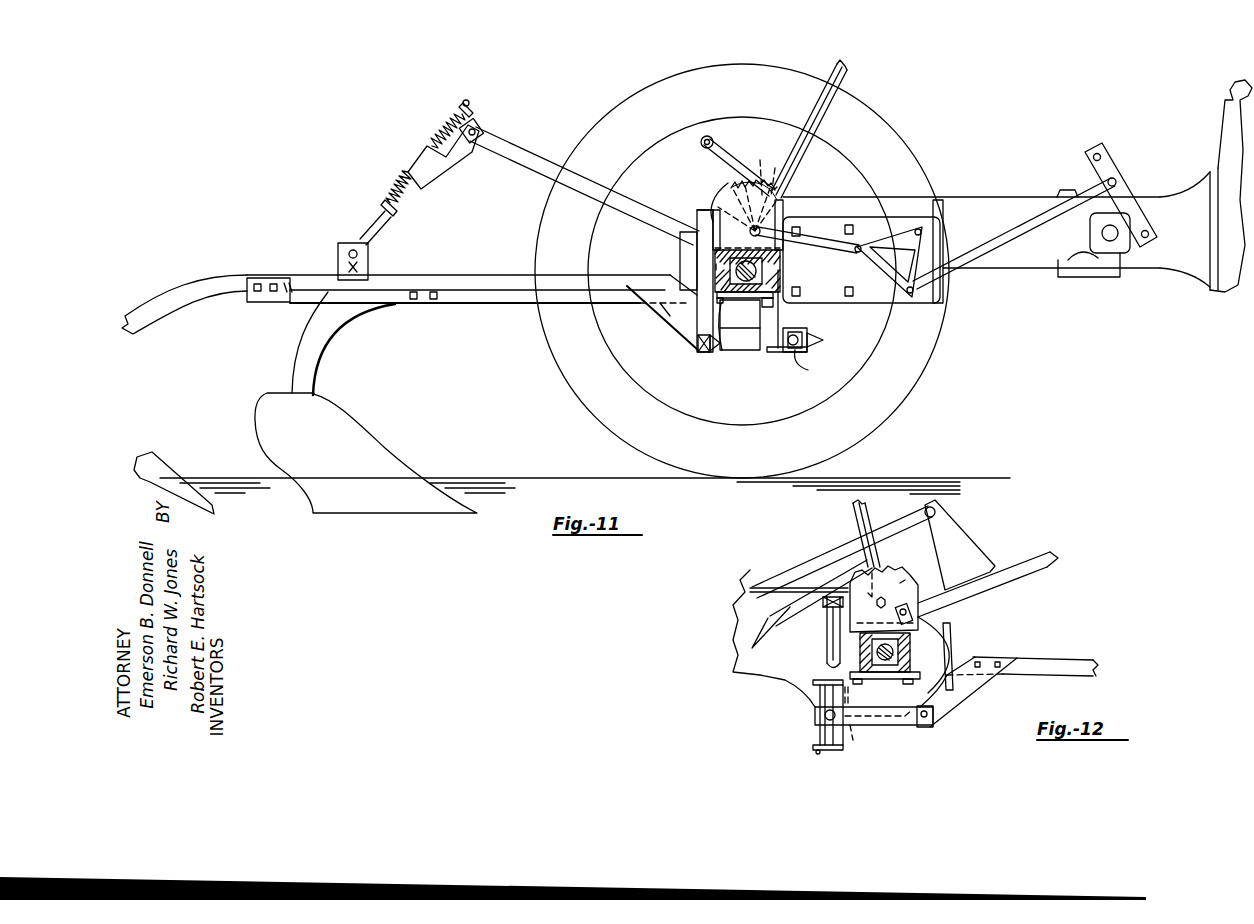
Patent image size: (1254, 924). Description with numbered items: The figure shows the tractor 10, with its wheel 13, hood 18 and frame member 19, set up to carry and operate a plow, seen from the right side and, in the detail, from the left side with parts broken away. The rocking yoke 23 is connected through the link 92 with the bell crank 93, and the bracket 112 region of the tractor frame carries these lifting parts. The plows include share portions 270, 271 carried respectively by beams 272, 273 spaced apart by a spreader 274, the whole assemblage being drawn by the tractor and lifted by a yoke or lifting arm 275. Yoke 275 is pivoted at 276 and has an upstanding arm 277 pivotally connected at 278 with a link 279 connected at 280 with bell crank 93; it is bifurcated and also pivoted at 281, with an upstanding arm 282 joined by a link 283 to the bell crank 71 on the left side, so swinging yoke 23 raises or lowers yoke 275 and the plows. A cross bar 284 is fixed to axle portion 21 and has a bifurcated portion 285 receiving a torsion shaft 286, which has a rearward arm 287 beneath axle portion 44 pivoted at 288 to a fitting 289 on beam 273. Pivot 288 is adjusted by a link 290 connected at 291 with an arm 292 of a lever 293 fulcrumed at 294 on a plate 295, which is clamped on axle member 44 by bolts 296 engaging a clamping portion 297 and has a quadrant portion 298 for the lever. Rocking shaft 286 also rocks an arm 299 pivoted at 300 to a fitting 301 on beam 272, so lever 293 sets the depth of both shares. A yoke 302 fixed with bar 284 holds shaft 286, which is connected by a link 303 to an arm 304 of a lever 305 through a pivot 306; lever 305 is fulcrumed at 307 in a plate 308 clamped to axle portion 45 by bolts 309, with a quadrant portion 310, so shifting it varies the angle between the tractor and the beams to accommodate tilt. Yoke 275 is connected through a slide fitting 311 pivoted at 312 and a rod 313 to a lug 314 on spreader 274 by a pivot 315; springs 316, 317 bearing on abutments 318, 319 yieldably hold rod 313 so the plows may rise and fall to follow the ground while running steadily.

In FIG. 11, the tractor 10 is at (1017, 192).
In FIG. 11, the wheel 13 is at (742, 271).
In FIG. 11, the hood 18 is at (1235, 125).
In FIG. 11, the frame member 19 is at (1046, 239).
In FIG. 11, the axle portion 21 is at (680, 244).
In FIG. 12, the axle portion 21 is at (952, 628).
In FIG. 11, the rocking yoke 23 is at (1148, 155).
In FIG. 11, the axle portion 44 is at (770, 272).
In FIG. 12, the axle portion 45 is at (884, 672).
In FIG. 12, the bell crank 71 is at (740, 642).
In FIG. 11, the link 92 is at (1002, 240).
In FIG. 11, the bell crank 93 is at (885, 290).
In FIG. 11, the bracket 112 is at (1112, 268).
In FIG. 11, the share portion 270 is at (158, 466).
In FIG. 11, the share portion 271 is at (366, 402).
In FIG. 11, the beam 272 is at (215, 278).
In FIG. 12, the beam 272 is at (1053, 660).
In FIG. 11, the beam 273 is at (480, 296).
In FIG. 11, the spreader 274 is at (312, 300).
In FIG. 11, the yoke or lifting arm 275 is at (535, 158).
In FIG. 12, the yoke or lifting arm 275 is at (1035, 555).
In FIG. 11, the pivot 276 is at (728, 215).
In FIG. 11, the upstanding arm 277 is at (677, 170).
In FIG. 11, the pivot 278 is at (710, 137).
In FIG. 11, the link 279 is at (752, 138).
In FIG. 11, the pivot connection 280 is at (855, 250).
In FIG. 12, the pivot 281 is at (920, 608).
In FIG. 12, the upstanding arm 282 is at (955, 540).
In FIG. 12, the link 283 is at (838, 570).
In FIG. 11, the cross bar 284 is at (780, 352).
In FIG. 12, the cross bar 284 is at (866, 720).
In FIG. 11, the bifurcated portion 285 is at (820, 340).
In FIG. 11, the torsion shaft 286 is at (820, 365).
In FIG. 12, the torsion shaft 286 is at (825, 716).
In FIG. 11, the arm 287 is at (718, 350).
In FIG. 11, the pivot 288 is at (702, 352).
In FIG. 11, the fitting 289 is at (640, 325).
In FIG. 11, the link 290 is at (697, 258).
In FIG. 11, the connection 291 is at (694, 207).
In FIG. 11, the arm 292 is at (758, 165).
In FIG. 11, the lever 293 is at (848, 90).
In FIG. 11, the fulcrum 294 is at (788, 195).
In FIG. 11, the plate 295 is at (792, 218).
In FIG. 11, the bolts 296 is at (878, 217).
In FIG. 11, the clamping portion 297 is at (750, 340).
In FIG. 11, the quadrant portion 298 is at (776, 175).
In FIG. 12, the arm 299 is at (898, 723).
In FIG. 12, the pivot 300 is at (933, 722).
In FIG. 12, the fitting 301 is at (975, 696).
In FIG. 12, the yoke 302 is at (828, 752).
In FIG. 12, the link 303 is at (830, 643).
In FIG. 12, the arm 304 is at (840, 622).
In FIG. 12, the lever 305 is at (856, 518).
In FIG. 12, the pivot 306 is at (830, 597).
In FIG. 12, the fulcrum 307 is at (906, 604).
In FIG. 12, the plate 308 is at (898, 585).
In FIG. 12, the bolts 309 is at (830, 667).
In FIG. 12, the quadrant portion 310 is at (884, 597).
In FIG. 11, the slide fitting 311 is at (440, 170).
In FIG. 11, the pivot 312 is at (482, 128).
In FIG. 11, the rod 313 is at (373, 226).
In FIG. 11, the lug 314 is at (340, 246).
In FIG. 11, the pivot 315 is at (349, 259).
In FIG. 11, the spring 316 is at (445, 125).
In FIG. 11, the spring 317 is at (400, 184).
In FIG. 11, the abutment 318 is at (462, 100).
In FIG. 11, the abutment 319 is at (381, 206).